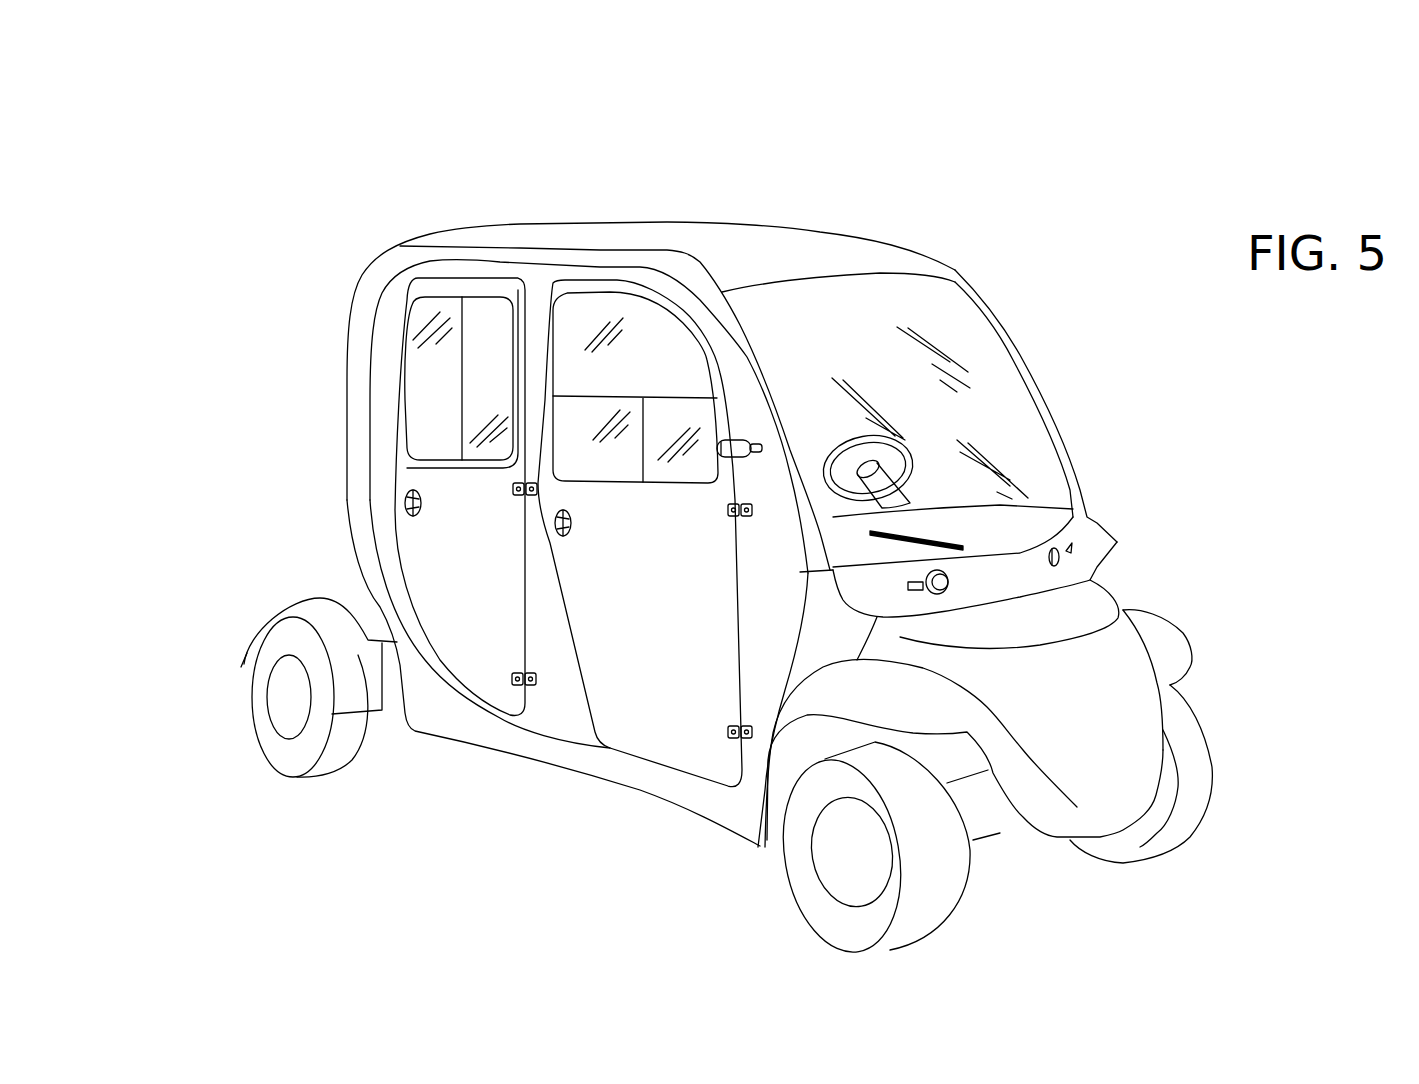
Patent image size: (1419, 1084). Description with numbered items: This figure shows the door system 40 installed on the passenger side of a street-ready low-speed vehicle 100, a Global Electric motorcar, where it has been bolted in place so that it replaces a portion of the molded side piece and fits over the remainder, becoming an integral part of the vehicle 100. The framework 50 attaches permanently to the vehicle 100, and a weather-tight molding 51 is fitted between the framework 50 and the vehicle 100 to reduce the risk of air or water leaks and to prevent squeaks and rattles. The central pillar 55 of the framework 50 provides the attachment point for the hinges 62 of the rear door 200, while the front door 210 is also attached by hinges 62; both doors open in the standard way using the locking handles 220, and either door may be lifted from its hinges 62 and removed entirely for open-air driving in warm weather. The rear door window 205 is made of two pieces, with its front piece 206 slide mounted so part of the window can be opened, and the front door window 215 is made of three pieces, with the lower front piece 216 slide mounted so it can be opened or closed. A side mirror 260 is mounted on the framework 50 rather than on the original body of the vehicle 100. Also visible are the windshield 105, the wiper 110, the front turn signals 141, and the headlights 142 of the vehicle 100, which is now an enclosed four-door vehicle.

The door system 40 is at (397, 218).
The framework 50 is at (393, 287).
The molding 51 is at (557, 240).
The central pillar 55 is at (535, 305).
The hinges 62 is at (513, 488).
The vehicle 100 is at (995, 308).
The windshield 105 is at (995, 402).
The wiper 110 is at (903, 533).
The front turn signals 141 is at (1071, 549).
The headlights 142 is at (948, 585).
The rear door 200 is at (460, 543).
The rear door window 205 is at (433, 385).
The front piece 206 is at (483, 318).
The front door 210 is at (641, 613).
The front door window 215 is at (637, 325).
The lower front piece 216 is at (673, 405).
The locking handles 220 is at (555, 523).
The side mirror 260 is at (720, 455).